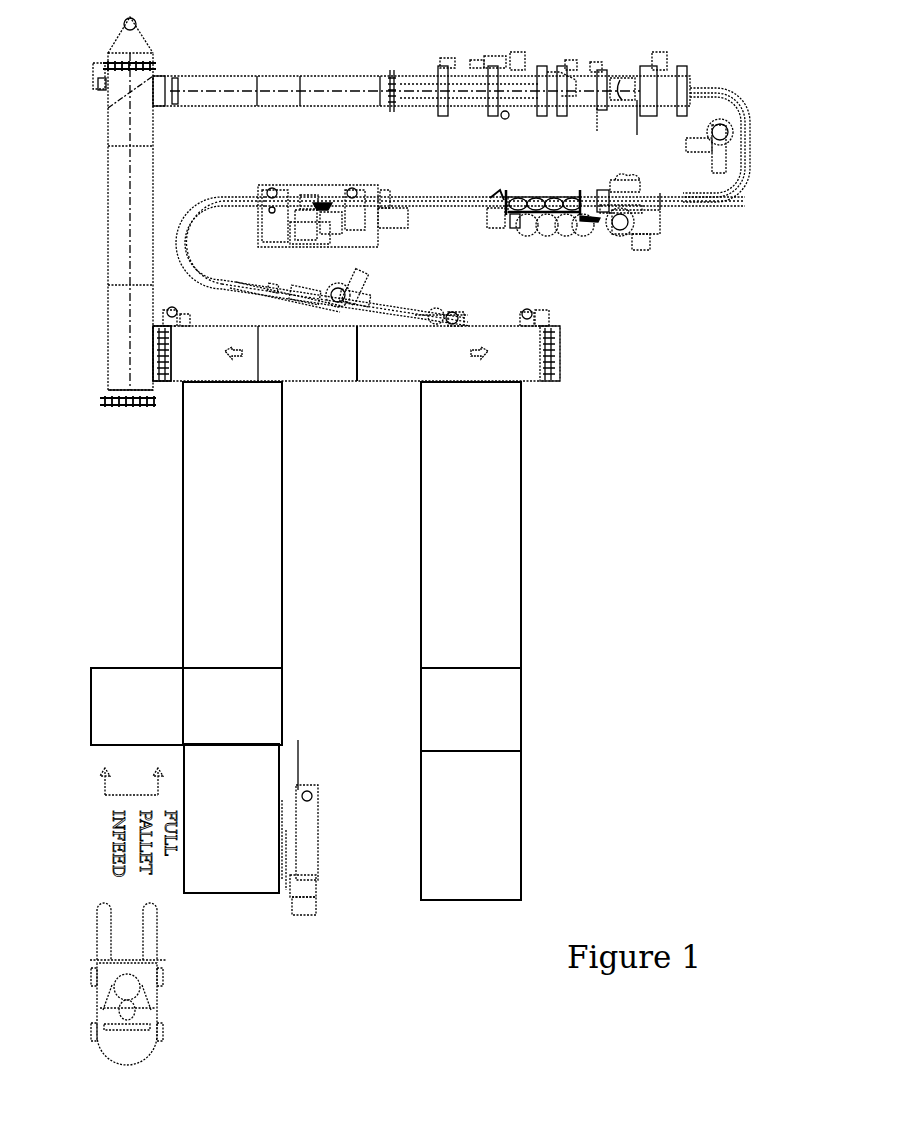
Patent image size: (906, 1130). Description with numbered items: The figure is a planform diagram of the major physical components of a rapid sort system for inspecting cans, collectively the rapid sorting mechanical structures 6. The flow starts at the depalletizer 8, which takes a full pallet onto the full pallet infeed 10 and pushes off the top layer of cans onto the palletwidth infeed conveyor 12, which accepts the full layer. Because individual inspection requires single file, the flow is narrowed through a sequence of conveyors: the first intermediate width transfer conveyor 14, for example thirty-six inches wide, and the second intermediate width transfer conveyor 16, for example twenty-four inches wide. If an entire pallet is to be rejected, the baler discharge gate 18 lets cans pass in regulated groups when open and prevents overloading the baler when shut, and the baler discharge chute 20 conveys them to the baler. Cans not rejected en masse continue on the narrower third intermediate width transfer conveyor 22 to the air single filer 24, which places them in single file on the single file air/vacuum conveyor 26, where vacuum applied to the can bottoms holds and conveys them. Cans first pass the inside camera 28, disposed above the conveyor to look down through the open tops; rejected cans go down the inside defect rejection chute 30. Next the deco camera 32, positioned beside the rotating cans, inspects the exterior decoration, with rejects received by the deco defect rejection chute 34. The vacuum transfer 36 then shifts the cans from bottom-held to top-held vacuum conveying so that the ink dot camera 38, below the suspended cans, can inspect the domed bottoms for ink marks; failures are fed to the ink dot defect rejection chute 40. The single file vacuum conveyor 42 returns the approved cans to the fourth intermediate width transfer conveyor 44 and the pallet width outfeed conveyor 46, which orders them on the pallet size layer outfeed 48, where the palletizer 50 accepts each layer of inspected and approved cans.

The rapid sorting mechanical structures 6 is at (624, 457).
The depalletizer 8 is at (237, 895).
The full pallet infeed 10 is at (90, 719).
The palletwidth infeed conveyor 12 is at (181, 541).
The first intermediate width transfer conveyor 14 is at (169, 388).
The second intermediate width transfer conveyor 16 is at (130, 176).
The baler discharge gate 18 is at (107, 109).
The baler discharge chute 20 is at (115, 33).
The third intermediate width transfer conveyor 22 is at (288, 75).
The air single filer 24 is at (527, 47).
The single file air/vacuum conveyor 26 is at (752, 174).
The inside camera #1 28 is at (584, 228).
The inside defect rejection chute #1 30 is at (512, 228).
The deco camera #2 32 is at (523, 172).
The deco defect rejection chute #2 34 is at (411, 228).
The vacuum transfer 36 is at (423, 183).
The ink dot camera #3 38 is at (320, 205).
The ink dot defect rejection chute #3 40 is at (321, 229).
The single file vacuum conveyor 42 is at (182, 243).
The fourth intermediate width transfer conveyor 44 is at (563, 356).
The pallet width outfeed conveyor 46 is at (523, 532).
The pallet size layer outfeed 48 is at (524, 716).
The palletizer 50 is at (524, 853).